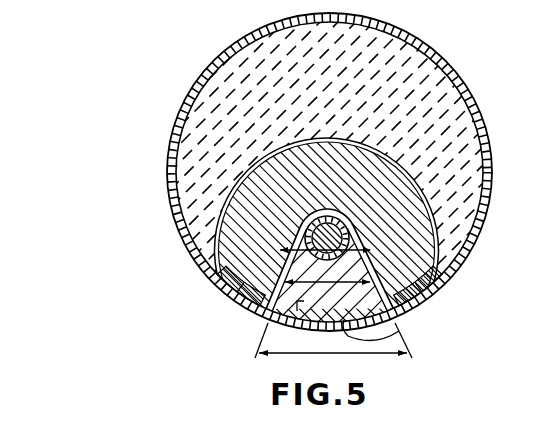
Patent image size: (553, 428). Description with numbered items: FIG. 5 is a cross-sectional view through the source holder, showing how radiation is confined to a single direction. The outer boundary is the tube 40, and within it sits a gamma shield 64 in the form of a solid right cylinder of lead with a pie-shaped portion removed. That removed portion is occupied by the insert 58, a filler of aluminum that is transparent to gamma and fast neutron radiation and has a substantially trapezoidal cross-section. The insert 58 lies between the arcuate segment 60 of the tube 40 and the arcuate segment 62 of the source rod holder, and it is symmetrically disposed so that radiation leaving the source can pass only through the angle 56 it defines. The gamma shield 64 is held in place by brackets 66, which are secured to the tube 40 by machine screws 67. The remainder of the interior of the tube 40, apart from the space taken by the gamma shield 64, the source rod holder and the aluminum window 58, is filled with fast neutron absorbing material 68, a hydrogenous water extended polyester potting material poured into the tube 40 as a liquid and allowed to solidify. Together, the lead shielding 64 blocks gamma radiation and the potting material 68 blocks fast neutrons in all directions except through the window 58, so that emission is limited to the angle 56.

The tube 40 is at (489, 124).
The fast neutron absorbing material 68 is at (405, 62).
The shielding 64 is at (310, 179).
The brackets 66 is at (441, 222).
The arcuate segment of the source rod holder 62 is at (374, 252).
The machine screws 67 is at (425, 303).
The insert 58 is at (277, 319).
The angle 56 is at (400, 333).
The arcuate segment of the tube 60 is at (338, 354).